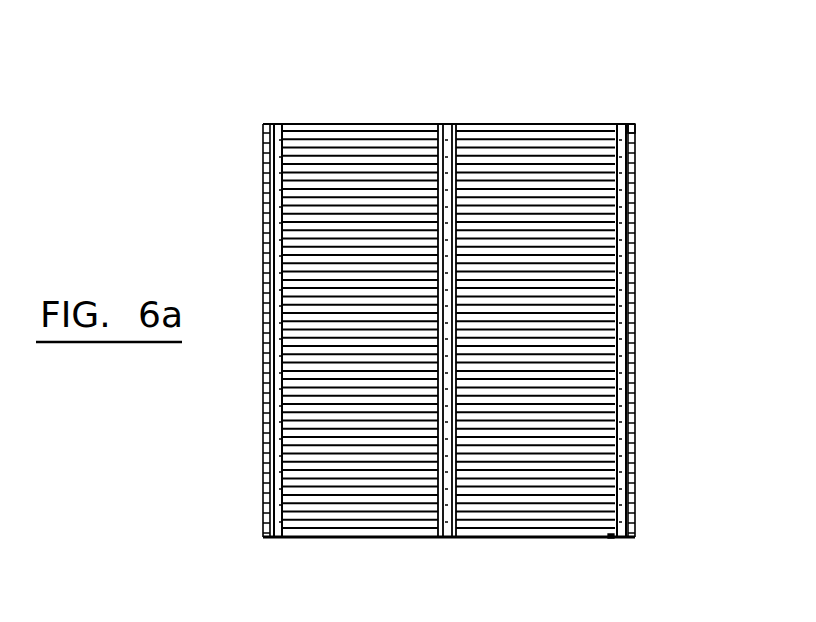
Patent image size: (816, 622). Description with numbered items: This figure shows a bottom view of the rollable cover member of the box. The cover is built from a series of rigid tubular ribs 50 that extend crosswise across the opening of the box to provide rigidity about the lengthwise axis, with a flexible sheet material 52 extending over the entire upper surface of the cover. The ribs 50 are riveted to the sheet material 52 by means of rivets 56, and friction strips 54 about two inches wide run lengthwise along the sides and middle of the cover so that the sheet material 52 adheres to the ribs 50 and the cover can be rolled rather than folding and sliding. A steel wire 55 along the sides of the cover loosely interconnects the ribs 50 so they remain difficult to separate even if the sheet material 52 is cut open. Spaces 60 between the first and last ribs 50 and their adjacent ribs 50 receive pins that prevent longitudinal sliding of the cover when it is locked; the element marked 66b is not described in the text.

The rigid tubular ribs 50 is at (473, 307).
The flexible sheet material 52 is at (363, 131).
The friction strips 54 is at (448, 327).
The steel wire 55 is at (638, 172).
The rivets 56 is at (449, 128).
The spaces 60 is at (633, 137).
The fastener 66b is at (611, 541).